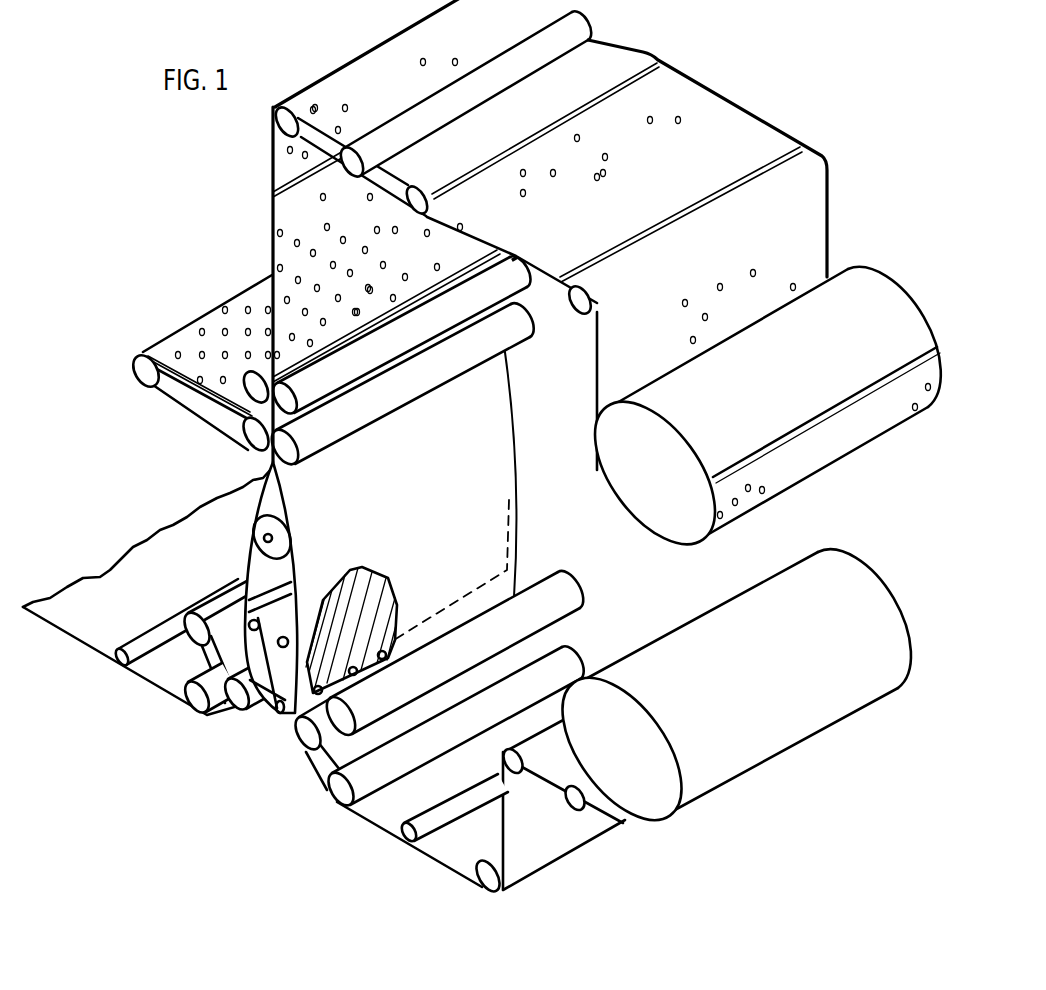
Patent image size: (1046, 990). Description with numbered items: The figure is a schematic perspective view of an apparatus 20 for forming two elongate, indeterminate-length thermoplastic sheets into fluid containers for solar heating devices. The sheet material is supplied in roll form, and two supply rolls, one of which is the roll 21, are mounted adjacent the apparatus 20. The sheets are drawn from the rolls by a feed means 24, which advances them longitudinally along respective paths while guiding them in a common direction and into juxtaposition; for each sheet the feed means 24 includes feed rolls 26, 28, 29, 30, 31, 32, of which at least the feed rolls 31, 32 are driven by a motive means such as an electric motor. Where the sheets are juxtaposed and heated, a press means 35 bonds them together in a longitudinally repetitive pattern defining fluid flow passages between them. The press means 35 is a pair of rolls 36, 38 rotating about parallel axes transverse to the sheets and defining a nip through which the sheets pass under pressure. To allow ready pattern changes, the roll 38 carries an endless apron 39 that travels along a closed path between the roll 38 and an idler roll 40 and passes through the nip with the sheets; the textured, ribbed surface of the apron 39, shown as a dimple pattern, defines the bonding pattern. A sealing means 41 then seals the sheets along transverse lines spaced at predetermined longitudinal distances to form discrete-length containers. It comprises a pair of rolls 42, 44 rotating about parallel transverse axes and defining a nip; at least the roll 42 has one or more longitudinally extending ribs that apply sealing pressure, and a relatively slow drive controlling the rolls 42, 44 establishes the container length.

The apparatus 20 is at (200, 283).
The roll 21 is at (647, 817).
The feed means 24 is at (578, 552).
The feed roll 26 is at (575, 815).
The feed roll 28 is at (513, 776).
The feed roll 29 is at (475, 885).
The feed roll 30 is at (200, 708).
The feed roll 31 is at (233, 700).
The feed roll 32 is at (284, 700).
The press means 35 is at (240, 462).
The roll 36 is at (510, 328).
The roll 38 is at (257, 433).
The endless apron 39 is at (183, 408).
The idler roll 40 is at (145, 373).
The sealing means 41 is at (260, 345).
The roll 42 is at (517, 280).
The roll 44 is at (247, 390).